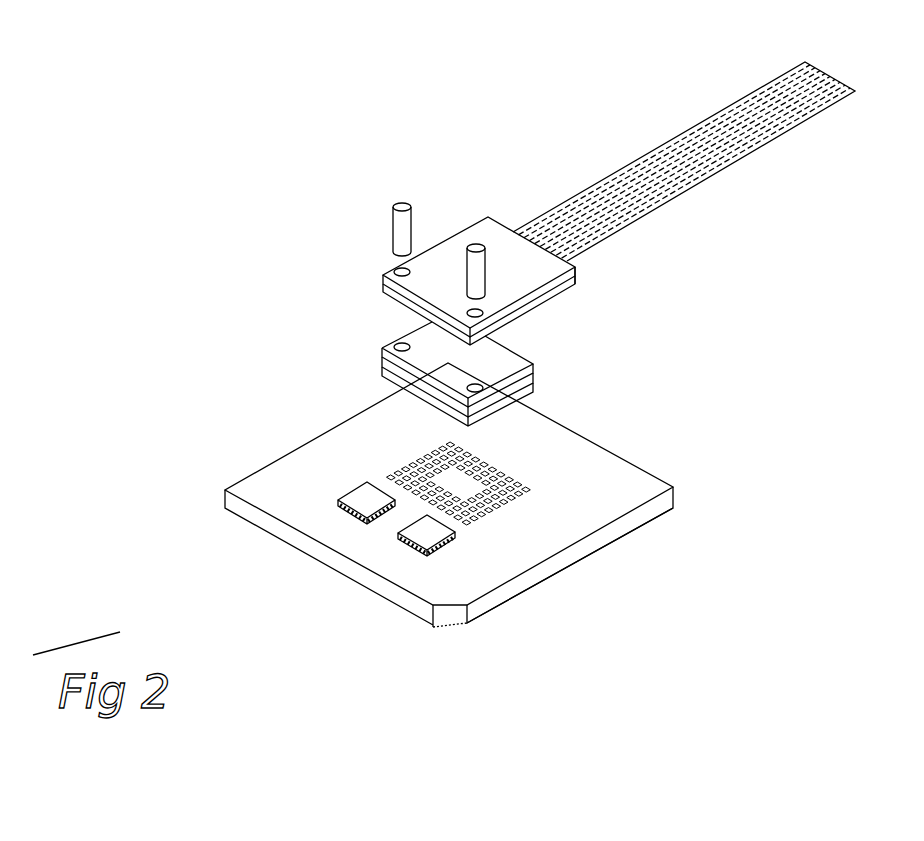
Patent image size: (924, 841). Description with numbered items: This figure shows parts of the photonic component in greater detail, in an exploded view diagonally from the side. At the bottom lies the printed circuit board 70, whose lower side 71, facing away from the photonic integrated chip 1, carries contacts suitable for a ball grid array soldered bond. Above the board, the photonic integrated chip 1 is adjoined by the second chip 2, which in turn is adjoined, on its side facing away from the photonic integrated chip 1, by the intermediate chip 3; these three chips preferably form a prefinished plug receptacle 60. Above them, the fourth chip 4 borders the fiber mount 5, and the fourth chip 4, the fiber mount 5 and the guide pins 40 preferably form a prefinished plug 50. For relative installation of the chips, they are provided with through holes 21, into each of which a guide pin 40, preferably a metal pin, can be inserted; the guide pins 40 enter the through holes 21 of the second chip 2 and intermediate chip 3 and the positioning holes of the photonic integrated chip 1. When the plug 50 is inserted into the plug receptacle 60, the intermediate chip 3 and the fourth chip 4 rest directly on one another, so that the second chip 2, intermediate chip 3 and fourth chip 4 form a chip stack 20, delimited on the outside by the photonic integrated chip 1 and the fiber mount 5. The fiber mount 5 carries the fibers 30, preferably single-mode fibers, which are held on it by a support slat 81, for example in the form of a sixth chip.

The photonic integrated chip 1 is at (517, 400).
The second chip 2 is at (535, 378).
The intermediate chip 3 is at (517, 360).
The fourth chip 4 is at (513, 317).
The fiber mount 5 is at (505, 228).
The chip stack 20 is at (379, 284).
The through holes 21 is at (397, 268).
The fibers 30 is at (812, 62).
The guide pin 40 is at (400, 204).
The plug 50 is at (553, 241).
The plug receptacle 60 is at (557, 395).
The printed circuit board 70 is at (645, 481).
The lower side 71 is at (588, 557).
The support slat 81 is at (612, 276).